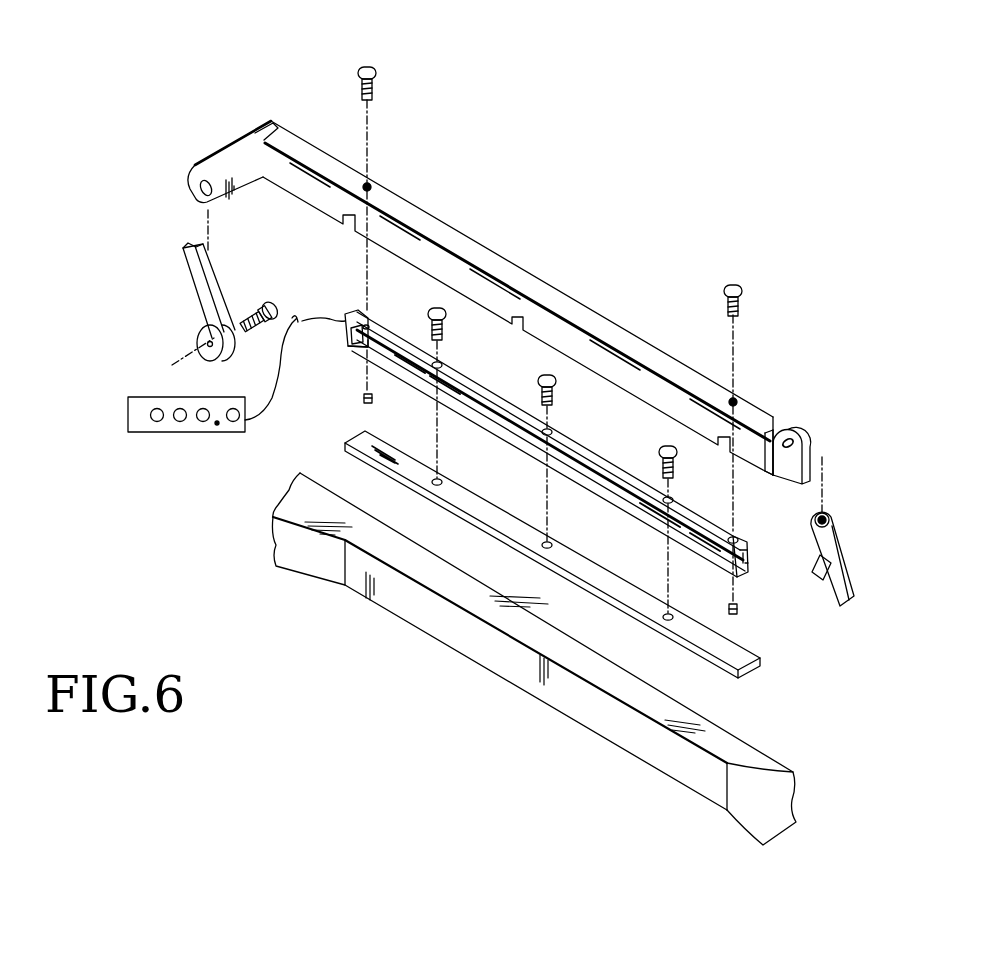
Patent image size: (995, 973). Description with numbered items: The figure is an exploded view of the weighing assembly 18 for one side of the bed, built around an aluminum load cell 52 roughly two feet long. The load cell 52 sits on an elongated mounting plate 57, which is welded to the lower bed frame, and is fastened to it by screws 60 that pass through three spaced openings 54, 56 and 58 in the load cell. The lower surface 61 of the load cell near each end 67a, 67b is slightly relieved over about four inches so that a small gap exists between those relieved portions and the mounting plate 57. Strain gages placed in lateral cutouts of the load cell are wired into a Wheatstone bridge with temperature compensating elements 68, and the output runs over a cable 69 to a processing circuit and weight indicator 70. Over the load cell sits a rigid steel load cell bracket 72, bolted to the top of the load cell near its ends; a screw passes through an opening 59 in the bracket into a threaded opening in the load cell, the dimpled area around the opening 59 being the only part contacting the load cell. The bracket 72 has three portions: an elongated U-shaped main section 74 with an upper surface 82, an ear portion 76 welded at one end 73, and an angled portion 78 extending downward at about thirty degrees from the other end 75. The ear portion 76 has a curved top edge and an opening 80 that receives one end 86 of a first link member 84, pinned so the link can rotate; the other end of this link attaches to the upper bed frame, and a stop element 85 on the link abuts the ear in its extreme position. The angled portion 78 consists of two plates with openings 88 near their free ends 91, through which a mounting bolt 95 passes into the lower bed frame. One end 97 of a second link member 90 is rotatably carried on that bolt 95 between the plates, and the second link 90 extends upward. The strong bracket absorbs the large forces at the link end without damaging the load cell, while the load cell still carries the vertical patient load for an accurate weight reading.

The cutting head assembly 18 is at (153, 188).
The load cell 52 is at (482, 390).
The opening 54 is at (441, 363).
The opening 56 is at (553, 431).
The mounting plate 57 is at (760, 665).
The opening 58 is at (673, 500).
The opening 59 is at (737, 397).
The screws 60 is at (432, 316).
The lower surface 61 is at (626, 512).
The end 67a is at (353, 312).
The end 67b is at (748, 574).
The temperature compensating elements 68 is at (348, 347).
The cable 69 is at (305, 325).
The processing circuit and weight indicator 70 is at (138, 433).
The load cell bracket 72 is at (578, 260).
The one end 73 is at (783, 425).
The main section 74 is at (410, 210).
The other end 75 is at (273, 122).
The ear portion 76 is at (806, 432).
The angled portion 78 is at (243, 147).
The opening 80 is at (803, 449).
The upper surface 82 is at (607, 328).
The first link member 84 is at (846, 560).
The stop element 85 is at (810, 568).
The one end 86 is at (826, 518).
The openings 88 is at (200, 194).
The second link member 90 is at (192, 277).
The free ends 91 is at (195, 170).
The mounting bolt 95 is at (253, 302).
The one end 97 is at (230, 357).